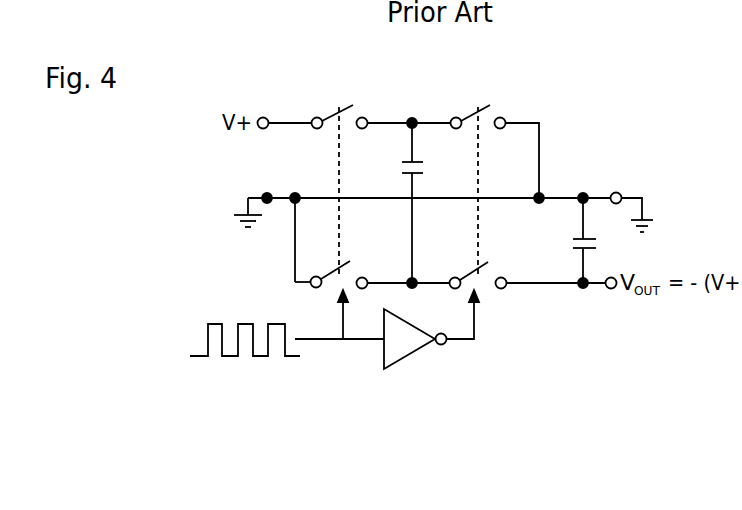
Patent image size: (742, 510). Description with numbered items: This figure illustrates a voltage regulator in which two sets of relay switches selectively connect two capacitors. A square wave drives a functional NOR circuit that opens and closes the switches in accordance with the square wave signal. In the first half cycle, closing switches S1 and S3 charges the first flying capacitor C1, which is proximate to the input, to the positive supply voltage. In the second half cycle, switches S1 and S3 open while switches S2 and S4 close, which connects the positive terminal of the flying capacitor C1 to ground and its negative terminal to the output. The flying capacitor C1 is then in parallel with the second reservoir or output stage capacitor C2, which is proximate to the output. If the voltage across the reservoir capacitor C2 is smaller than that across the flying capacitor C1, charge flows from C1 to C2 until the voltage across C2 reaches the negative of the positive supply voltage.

The relay switch S1 is at (337, 111).
The relay switch S2 is at (477, 111).
The relay switch S3 is at (338, 270).
The relay switch S4 is at (477, 266).
The flying capacitor C1 is at (399, 205).
The reservoir capacitor C2 is at (570, 240).